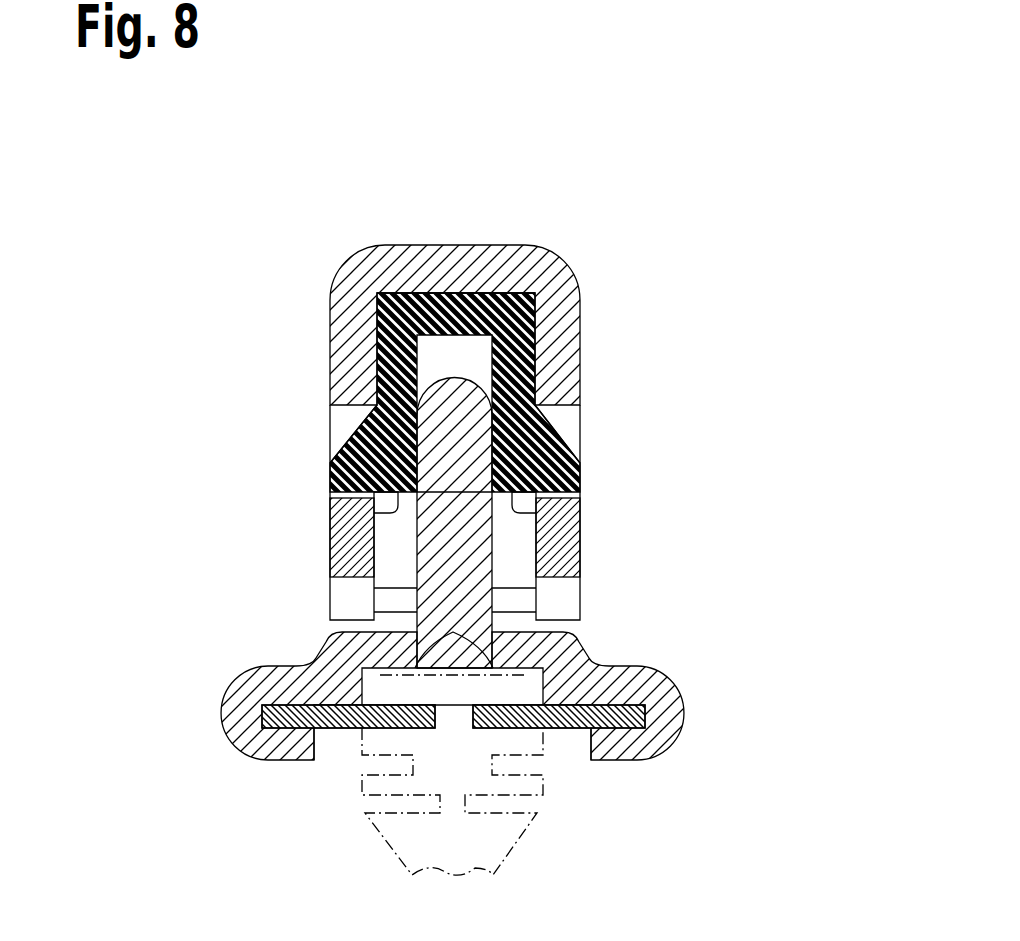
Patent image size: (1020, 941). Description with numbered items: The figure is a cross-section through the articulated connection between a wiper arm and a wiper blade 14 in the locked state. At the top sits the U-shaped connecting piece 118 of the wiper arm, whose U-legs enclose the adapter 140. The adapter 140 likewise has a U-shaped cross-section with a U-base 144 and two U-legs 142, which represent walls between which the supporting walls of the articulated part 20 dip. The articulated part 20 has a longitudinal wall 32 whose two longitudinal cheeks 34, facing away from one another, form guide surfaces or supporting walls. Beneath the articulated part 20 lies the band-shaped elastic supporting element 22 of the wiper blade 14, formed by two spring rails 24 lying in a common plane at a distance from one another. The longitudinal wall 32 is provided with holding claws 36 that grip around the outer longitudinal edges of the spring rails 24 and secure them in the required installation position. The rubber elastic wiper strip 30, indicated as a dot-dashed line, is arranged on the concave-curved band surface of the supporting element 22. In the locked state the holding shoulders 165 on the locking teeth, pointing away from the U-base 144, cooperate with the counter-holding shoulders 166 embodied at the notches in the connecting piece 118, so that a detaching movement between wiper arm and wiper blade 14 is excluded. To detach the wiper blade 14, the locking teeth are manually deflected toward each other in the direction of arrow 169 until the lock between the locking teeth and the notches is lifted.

The wiper blade 14 is at (688, 604).
The articulated part 20 is at (320, 642).
The supporting element 22 is at (348, 732).
The spring rails 24 is at (340, 728).
The wiper strip 30 is at (534, 830).
The longitudinal wall 32 is at (537, 380).
The longitudinal cheeks 34 is at (413, 537).
The holding claws 36 is at (235, 709).
The connecting piece 118 is at (572, 262).
The adapter 140 is at (474, 293).
The U-legs 142 is at (390, 572).
The U-base 144 is at (425, 298).
The holding shoulders 165 is at (398, 520).
The counter-holding shoulders 166 is at (330, 462).
The arrow 169 is at (315, 475).